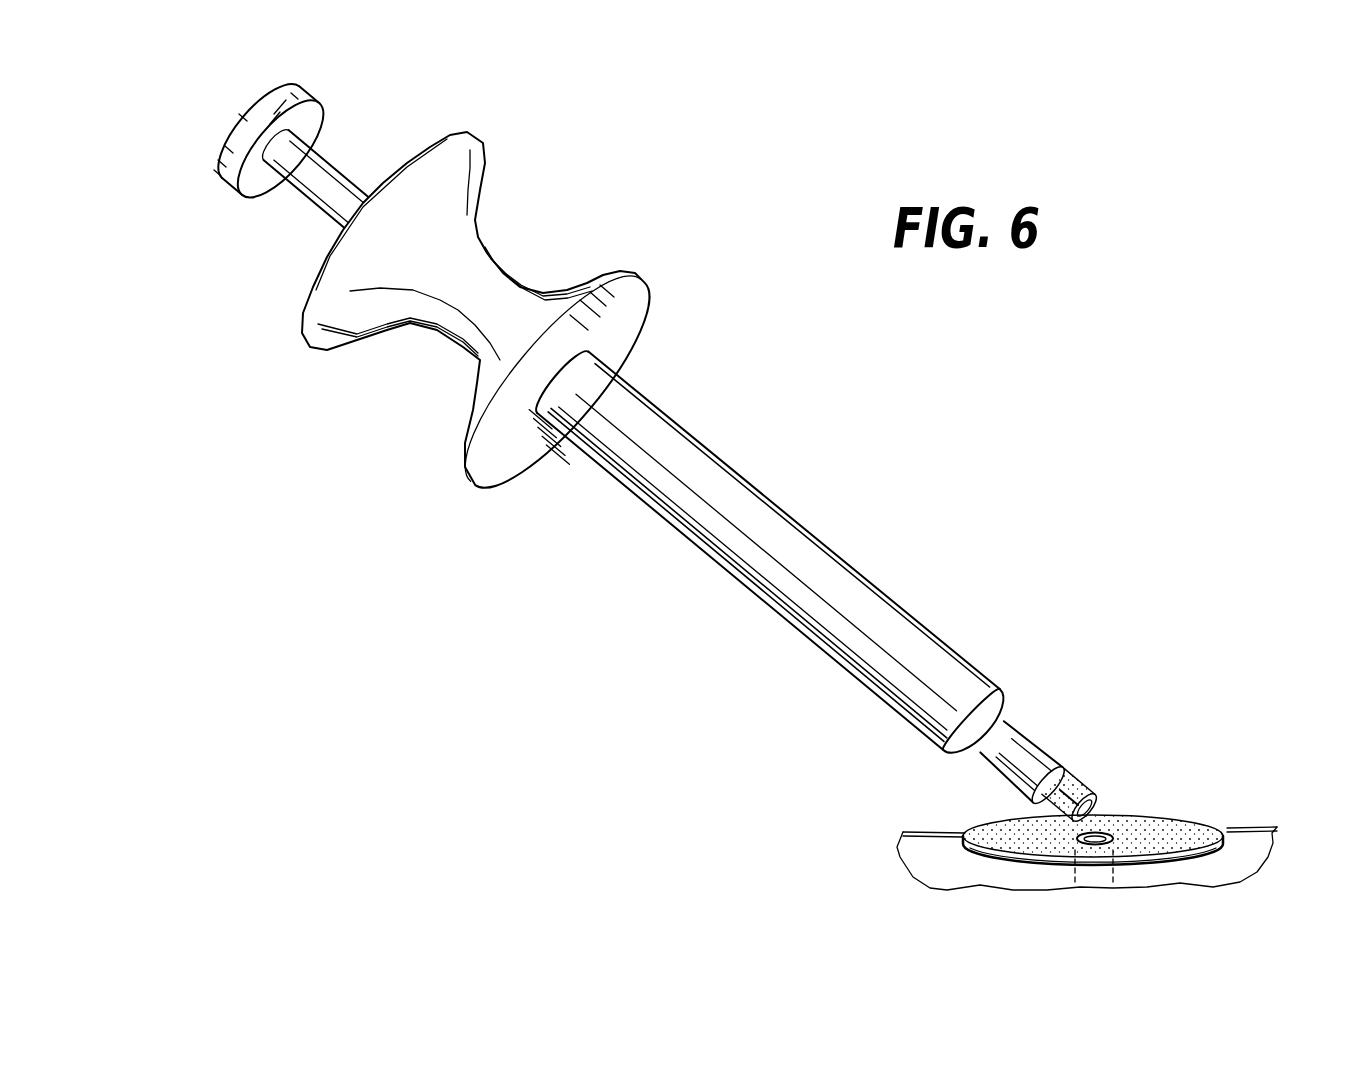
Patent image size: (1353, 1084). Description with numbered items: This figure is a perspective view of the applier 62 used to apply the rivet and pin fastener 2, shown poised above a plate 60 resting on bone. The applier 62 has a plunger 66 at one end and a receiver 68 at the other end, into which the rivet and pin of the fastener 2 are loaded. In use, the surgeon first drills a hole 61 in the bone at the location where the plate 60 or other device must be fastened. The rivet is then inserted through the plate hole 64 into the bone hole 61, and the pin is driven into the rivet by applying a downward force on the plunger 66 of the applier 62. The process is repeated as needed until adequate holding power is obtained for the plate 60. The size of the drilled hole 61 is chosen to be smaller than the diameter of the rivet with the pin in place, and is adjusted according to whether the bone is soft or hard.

The fastener 2 is at (1088, 786).
The plate 60 is at (1210, 830).
The hole 61 is at (1143, 867).
The applier 62 is at (647, 454).
The plate hole 64 is at (1100, 833).
The plunger 66 is at (216, 178).
The receiver 68 is at (1037, 737).